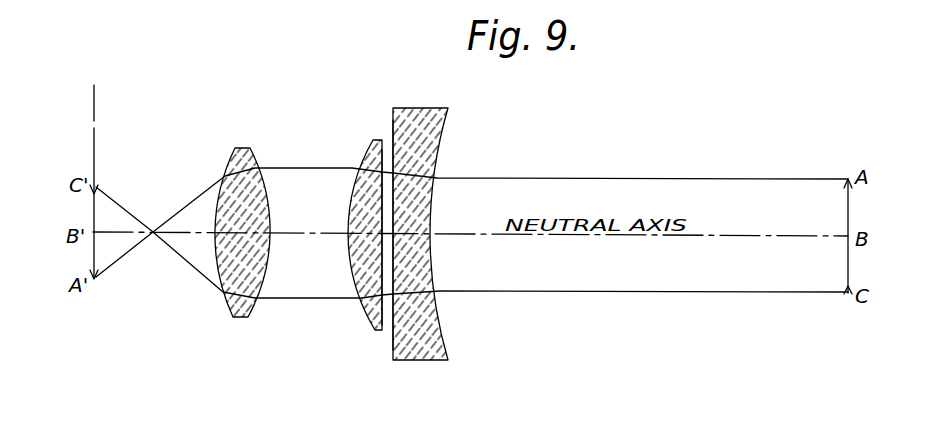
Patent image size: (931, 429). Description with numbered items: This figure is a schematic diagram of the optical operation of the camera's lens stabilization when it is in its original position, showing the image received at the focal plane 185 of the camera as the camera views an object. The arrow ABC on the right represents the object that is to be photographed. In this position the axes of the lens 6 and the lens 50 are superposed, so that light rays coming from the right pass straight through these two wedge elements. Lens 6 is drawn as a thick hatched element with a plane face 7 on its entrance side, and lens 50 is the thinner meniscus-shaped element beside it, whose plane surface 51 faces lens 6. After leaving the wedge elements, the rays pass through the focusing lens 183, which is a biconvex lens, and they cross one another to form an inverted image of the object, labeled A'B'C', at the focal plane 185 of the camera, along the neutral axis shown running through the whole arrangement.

The focal plane 185 is at (97, 128).
The focusing lens 183 is at (236, 151).
The lens 50 is at (375, 140).
The plane surface of lens 51 is at (383, 315).
The lens 6 is at (443, 133).
The plane entrance face of block 7 is at (393, 348).